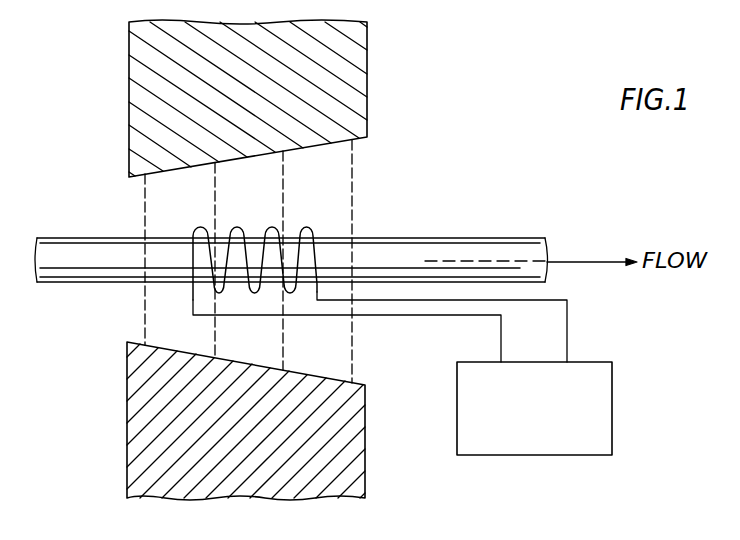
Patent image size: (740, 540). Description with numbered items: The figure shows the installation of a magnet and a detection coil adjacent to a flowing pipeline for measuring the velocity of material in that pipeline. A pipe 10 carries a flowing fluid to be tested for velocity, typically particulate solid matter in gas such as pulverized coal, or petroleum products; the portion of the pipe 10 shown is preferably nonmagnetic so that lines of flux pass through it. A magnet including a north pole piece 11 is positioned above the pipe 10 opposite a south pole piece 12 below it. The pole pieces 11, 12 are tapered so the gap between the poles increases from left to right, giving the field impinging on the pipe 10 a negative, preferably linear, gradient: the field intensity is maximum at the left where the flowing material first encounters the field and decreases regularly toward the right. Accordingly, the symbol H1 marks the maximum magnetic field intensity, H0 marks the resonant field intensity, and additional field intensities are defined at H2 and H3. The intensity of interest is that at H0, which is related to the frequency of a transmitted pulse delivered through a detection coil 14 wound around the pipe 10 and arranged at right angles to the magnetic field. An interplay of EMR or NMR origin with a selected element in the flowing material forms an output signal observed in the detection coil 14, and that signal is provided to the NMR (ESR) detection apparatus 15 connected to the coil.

The pipe 10 is at (67, 281).
The north pole piece 11 is at (355, 67).
The south pole piece 12 is at (127, 454).
The detection coil 14 is at (201, 228).
The apparatus 15 is at (614, 403).
The maximum magnetic field intensity H1 is at (129, 259).
The resonant field intensity H0 is at (230, 260).
The additional field intensity H2 is at (298, 260).
The additional field intensity H3 is at (367, 261).